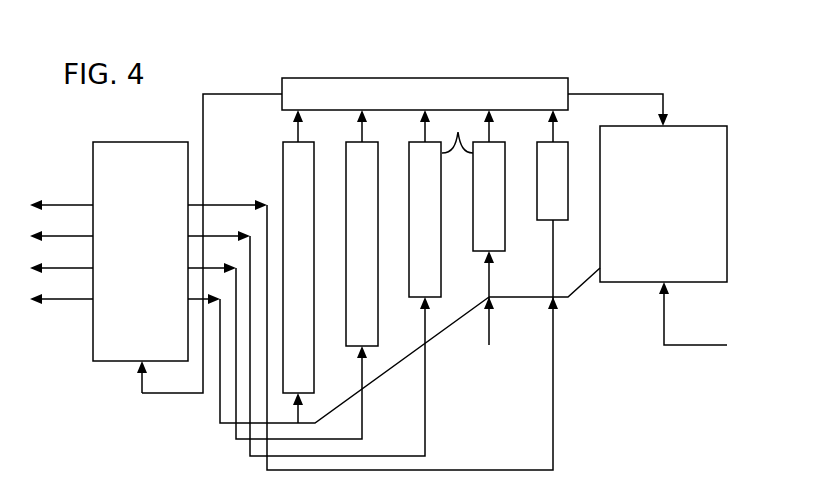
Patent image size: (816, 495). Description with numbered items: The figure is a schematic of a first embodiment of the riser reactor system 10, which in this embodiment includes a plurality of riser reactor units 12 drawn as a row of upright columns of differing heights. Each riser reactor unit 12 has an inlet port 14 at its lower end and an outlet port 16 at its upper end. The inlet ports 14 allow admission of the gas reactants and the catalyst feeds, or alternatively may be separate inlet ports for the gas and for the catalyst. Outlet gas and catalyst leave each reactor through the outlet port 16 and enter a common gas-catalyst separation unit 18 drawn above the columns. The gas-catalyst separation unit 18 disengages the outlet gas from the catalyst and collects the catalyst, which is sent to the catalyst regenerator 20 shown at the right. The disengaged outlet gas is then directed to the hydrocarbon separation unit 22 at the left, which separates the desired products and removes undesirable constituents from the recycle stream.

The riser reactor system 10 is at (728, 113).
The riser reactor unit 12 is at (537, 203).
The inlet port 14 is at (480, 251).
The outlet port 16 is at (457, 132).
The gas-catalyst separation unit 18 is at (486, 78).
The catalyst regenerator 20 is at (655, 210).
The hydrocarbon separation unit 22 is at (132, 249).